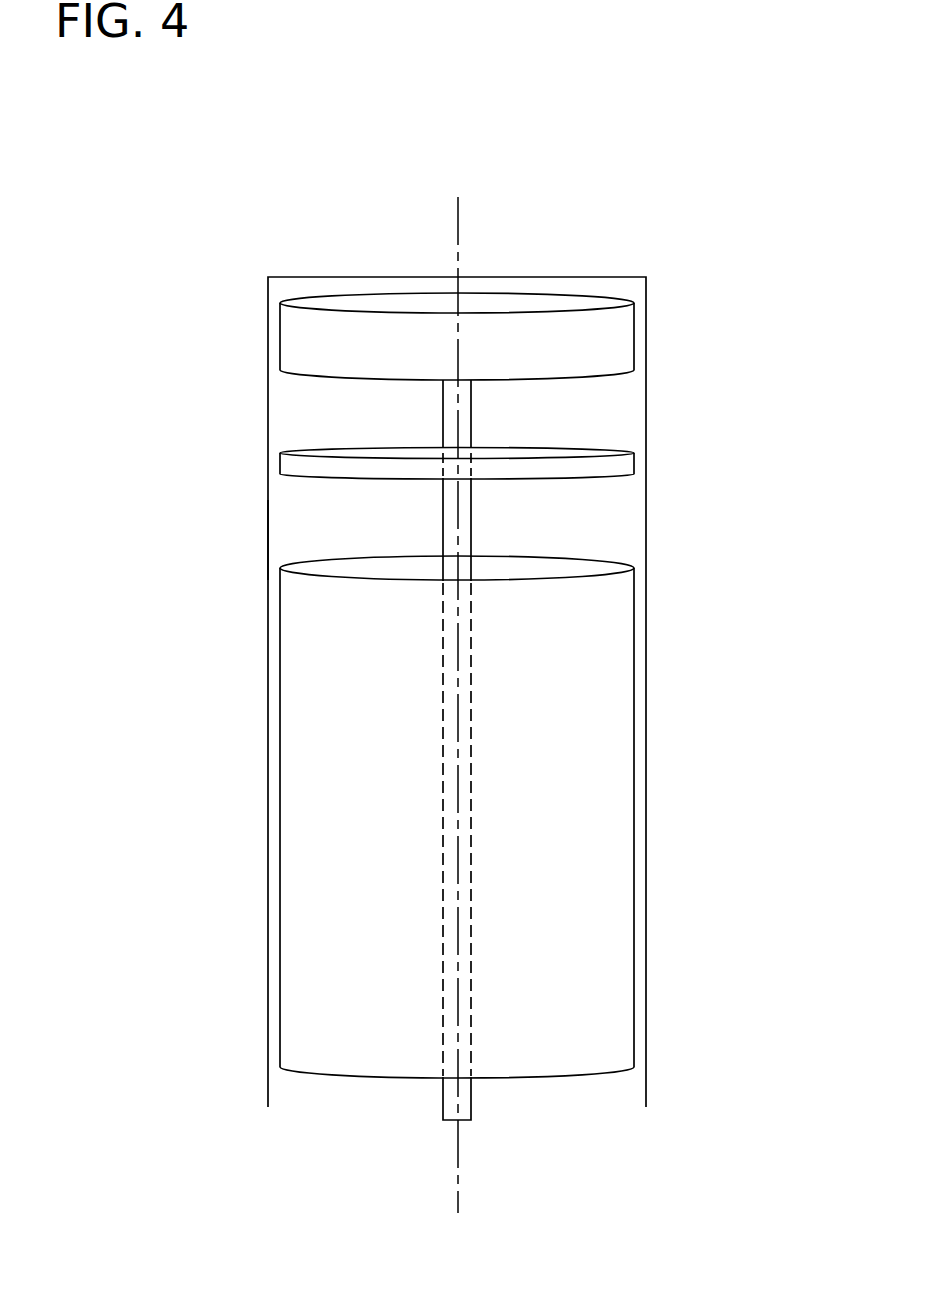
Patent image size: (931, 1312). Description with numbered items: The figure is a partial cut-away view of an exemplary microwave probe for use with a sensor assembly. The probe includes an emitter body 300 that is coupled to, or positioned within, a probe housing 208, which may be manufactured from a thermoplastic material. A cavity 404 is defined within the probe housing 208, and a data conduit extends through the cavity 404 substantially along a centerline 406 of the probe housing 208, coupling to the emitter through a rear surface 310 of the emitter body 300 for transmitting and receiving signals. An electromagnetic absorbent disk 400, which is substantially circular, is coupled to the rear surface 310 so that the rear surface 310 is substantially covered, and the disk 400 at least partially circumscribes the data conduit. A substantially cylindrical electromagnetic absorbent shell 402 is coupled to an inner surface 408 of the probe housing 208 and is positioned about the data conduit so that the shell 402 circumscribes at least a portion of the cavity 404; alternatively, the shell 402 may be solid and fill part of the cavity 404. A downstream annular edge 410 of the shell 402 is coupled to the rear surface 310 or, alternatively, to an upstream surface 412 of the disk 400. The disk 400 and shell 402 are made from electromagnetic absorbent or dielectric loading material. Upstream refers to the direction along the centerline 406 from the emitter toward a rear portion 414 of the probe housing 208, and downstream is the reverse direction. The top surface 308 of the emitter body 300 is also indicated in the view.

The probe housing 208 is at (646, 287).
The emitter body 300 is at (562, 300).
The top surface of disk 300 308 is at (372, 300).
The rear surface 310 is at (315, 378).
The electromagnetic absorbent disk 400 is at (614, 461).
The electromagnetic absorbent shell 402 is at (615, 662).
The cavity 404 is at (555, 526).
The centerline 406 is at (458, 216).
The inner surface 408 is at (268, 549).
The downstream annular edge 410 is at (603, 557).
The upstream surface 412 is at (582, 478).
The rear portion 414 is at (672, 810).